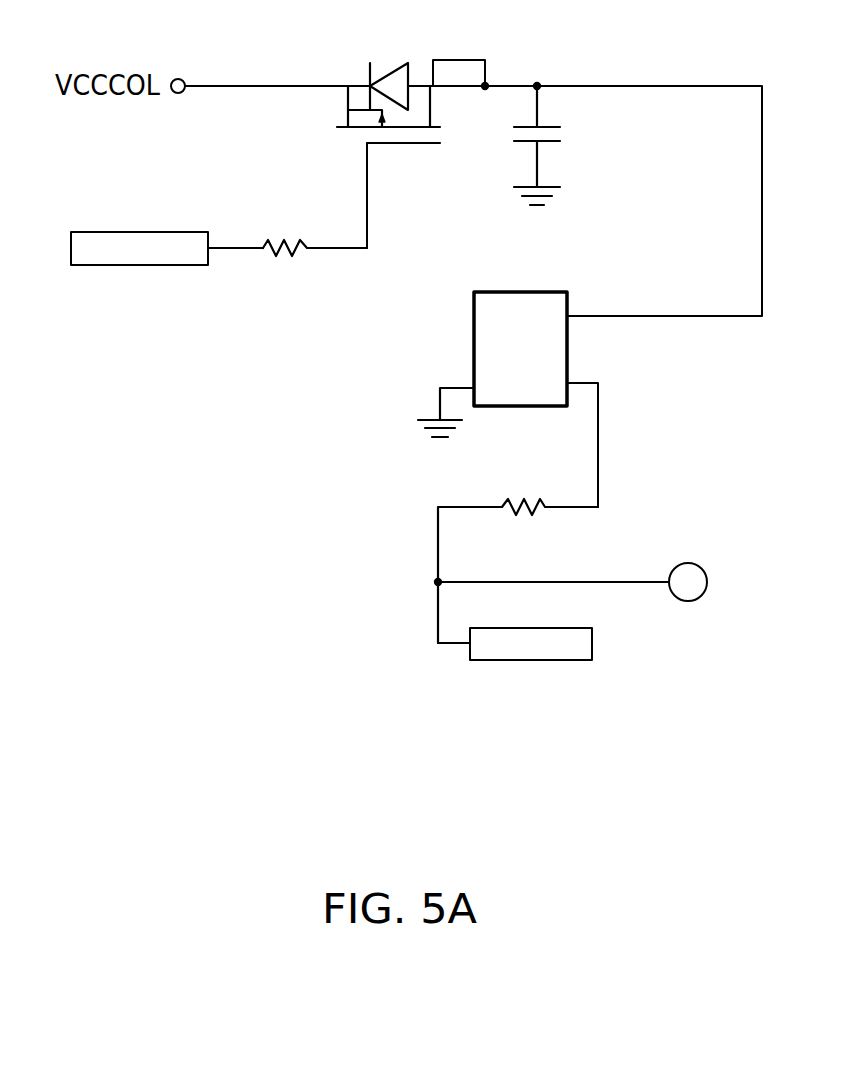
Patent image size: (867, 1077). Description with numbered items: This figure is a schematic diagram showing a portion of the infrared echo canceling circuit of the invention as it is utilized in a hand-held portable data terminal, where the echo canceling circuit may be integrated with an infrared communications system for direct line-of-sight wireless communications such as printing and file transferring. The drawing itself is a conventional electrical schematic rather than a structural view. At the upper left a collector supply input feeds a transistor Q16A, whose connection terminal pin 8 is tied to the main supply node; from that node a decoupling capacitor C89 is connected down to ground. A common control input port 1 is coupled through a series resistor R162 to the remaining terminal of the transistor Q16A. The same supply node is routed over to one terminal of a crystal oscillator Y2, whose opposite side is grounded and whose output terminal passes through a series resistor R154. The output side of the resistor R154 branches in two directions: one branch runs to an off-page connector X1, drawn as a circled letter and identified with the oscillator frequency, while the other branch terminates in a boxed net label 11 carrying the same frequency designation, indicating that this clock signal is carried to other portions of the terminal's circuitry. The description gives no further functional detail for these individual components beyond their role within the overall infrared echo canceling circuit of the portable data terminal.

The transistor S19933DY Q16A is at (413, 124).
The pin 8 connection 8 is at (459, 73).
The capacitor 0.1UF C89 is at (581, 166).
The COMON port 1 is at (155, 248).
The resistor 200 ohm R162 is at (303, 244).
The crystal oscillator S6615 1.8432MHz Y2 is at (589, 382).
The resistor 33 ohm R154 is at (518, 546).
The off-page connector A X1 is at (571, 575).
The 1.8MHZ net label 11 is at (531, 644).